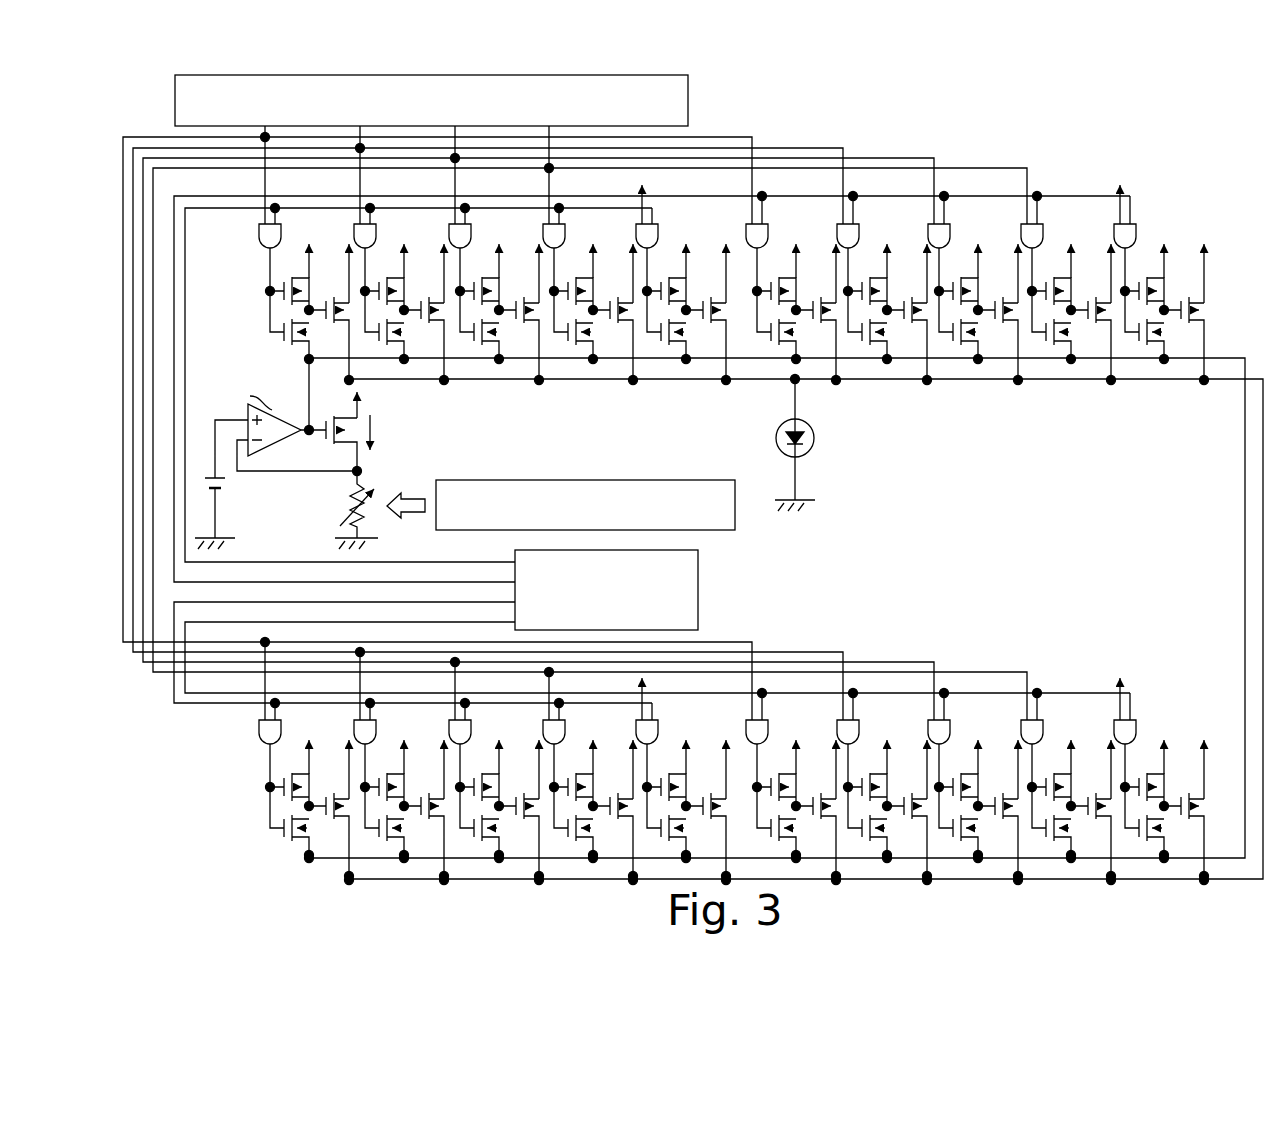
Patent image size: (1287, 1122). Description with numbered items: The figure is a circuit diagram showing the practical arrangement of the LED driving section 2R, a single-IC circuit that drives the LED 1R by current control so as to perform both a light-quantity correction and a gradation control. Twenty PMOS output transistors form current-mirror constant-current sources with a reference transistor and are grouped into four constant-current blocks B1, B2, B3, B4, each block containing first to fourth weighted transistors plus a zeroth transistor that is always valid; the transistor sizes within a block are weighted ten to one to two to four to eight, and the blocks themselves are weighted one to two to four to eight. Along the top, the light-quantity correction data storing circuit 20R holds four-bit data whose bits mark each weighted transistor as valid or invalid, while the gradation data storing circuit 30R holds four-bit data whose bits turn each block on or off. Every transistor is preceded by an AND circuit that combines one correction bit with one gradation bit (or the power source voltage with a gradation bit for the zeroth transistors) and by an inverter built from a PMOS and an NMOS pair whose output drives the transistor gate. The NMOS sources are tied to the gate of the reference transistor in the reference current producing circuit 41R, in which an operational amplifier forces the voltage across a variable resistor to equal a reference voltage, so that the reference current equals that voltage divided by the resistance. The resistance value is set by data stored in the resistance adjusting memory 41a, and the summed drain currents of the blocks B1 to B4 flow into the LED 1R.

The light-quantity correction data storing circuit 20R is at (690, 97).
The gradation data storing circuit 30R is at (699, 590).
The resistance adjusting memory 41a is at (636, 480).
The reference current producing circuit 41R is at (437, 441).
The LED 1R is at (814, 438).
The LED driving section 2R is at (1137, 143).
The constant-current block B1 is at (977, 658).
The constant-current block B2 is at (233, 787).
The constant-current block B3 is at (977, 152).
The constant-current block B4 is at (256, 297).